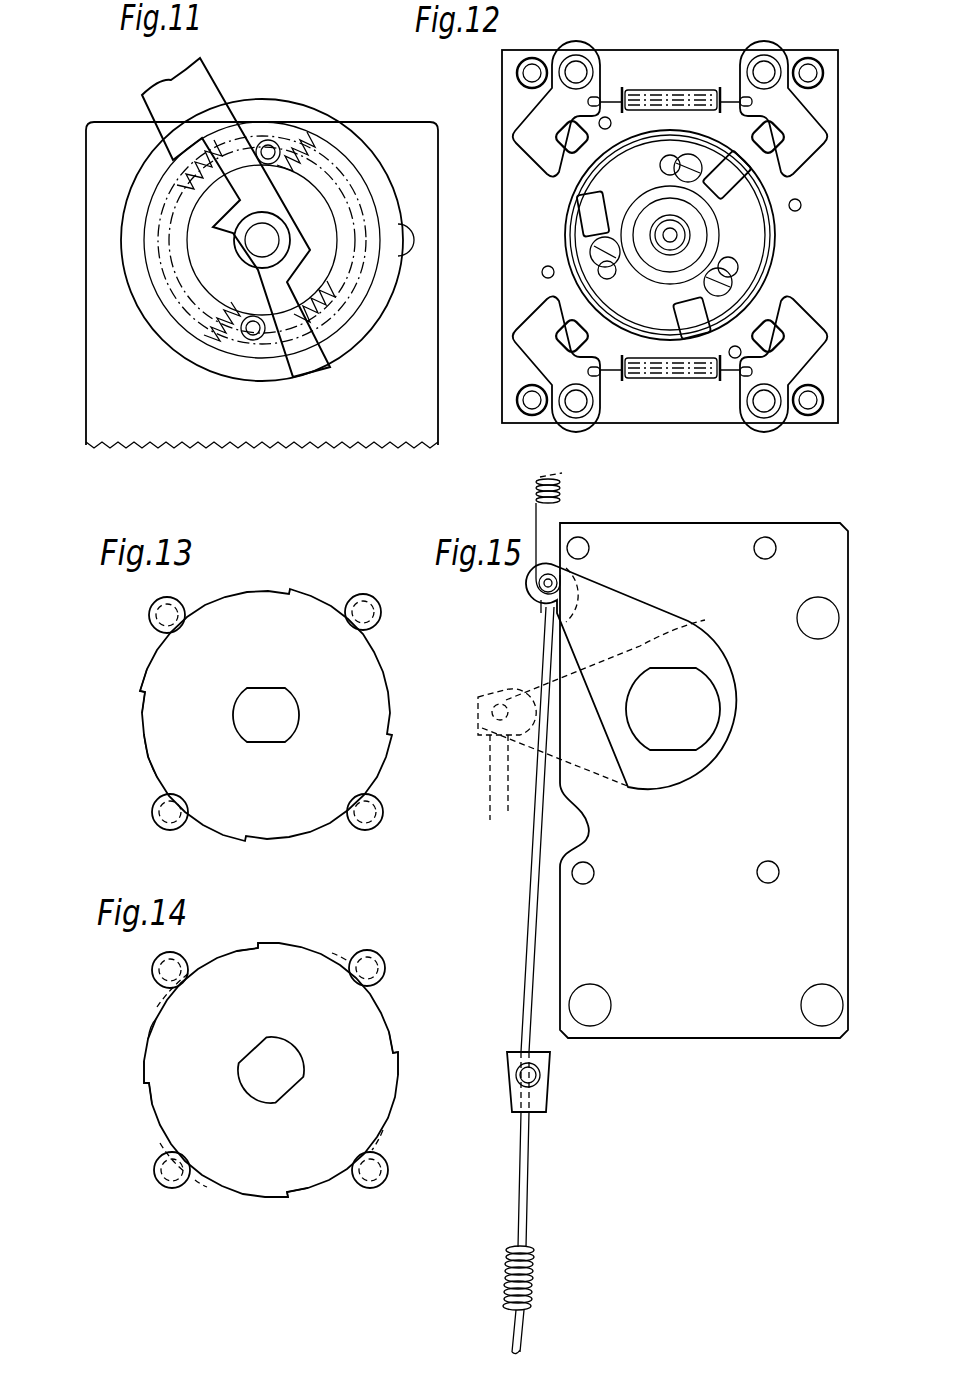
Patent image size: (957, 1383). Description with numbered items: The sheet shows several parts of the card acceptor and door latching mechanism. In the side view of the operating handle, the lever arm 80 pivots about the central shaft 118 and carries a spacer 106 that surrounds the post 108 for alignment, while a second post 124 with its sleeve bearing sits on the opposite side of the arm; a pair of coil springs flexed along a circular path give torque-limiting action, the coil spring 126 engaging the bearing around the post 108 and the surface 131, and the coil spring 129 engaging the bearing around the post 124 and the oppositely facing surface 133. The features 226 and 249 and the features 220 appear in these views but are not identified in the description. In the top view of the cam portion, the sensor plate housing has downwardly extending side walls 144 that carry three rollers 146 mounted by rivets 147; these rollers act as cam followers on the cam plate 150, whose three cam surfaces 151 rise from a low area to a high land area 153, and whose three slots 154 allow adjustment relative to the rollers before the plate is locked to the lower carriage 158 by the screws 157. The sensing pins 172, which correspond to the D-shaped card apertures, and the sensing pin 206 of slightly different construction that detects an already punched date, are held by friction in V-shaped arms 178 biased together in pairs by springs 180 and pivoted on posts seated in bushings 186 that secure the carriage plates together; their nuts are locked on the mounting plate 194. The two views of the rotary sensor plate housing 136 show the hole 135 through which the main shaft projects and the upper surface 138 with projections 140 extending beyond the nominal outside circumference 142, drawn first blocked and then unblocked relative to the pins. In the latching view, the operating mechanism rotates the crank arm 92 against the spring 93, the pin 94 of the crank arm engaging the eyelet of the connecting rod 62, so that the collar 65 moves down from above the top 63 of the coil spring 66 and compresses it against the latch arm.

In FIG. 11, the lever arm 80 is at (198, 118).
In FIG. 11, the spacer 106 is at (268, 140).
In FIG. 11, the post 108 is at (273, 146).
In FIG. 11, the coil spring 126 is at (300, 137).
In FIG. 11, the surface of the lever arm 133 is at (172, 155).
In FIG. 11, the central shaft 118 is at (249, 249).
In FIG. 11, the stop button 226 is at (411, 240).
In FIG. 12, the stop button 226 is at (564, 243).
In FIG. 11, the housing wall 249 is at (320, 427).
In FIG. 11, the coil spring 129 is at (223, 338).
In FIG. 11, the second post 124 is at (253, 340).
In FIG. 11, the surface of the lever arm 131 is at (327, 338).
In FIG. 12, the bushing 186 is at (565, 57).
In FIG. 12, the locating hole 220 is at (607, 117).
In FIG. 12, the springs 180 is at (718, 86).
In FIG. 12, the lower carriage 158 is at (690, 81).
In FIG. 12, the V-shaped arms 178 is at (553, 108).
In FIG. 12, the sensing pins 172 is at (562, 132).
In FIG. 13, the sensing pins 172 is at (160, 602).
In FIG. 14, the sensing pins 172 is at (161, 958).
In FIG. 12, the side walls 144 is at (580, 188).
In FIG. 12, the rivets 147 is at (578, 213).
In FIG. 12, the rollers 146 is at (582, 228).
In FIG. 12, the cam plate 150 is at (652, 188).
In FIG. 12, the slots 154 is at (598, 274).
In FIG. 12, the high land area 153 is at (757, 234).
In FIG. 12, the cam surfaces 151 is at (760, 262).
In FIG. 12, the screws 157 is at (591, 252).
In FIG. 12, the sensing pin 206 is at (565, 340).
In FIG. 13, the sensing pin 206 is at (162, 824).
In FIG. 14, the sensing pin 206 is at (164, 1185).
In FIG. 13, the rotary sensor plate housing 136 is at (242, 703).
In FIG. 14, the rotary sensor plate housing 136 is at (269, 1068).
In FIG. 13, the upper surface 138 is at (287, 649).
In FIG. 14, the upper surface 138 is at (289, 1002).
In FIG. 13, the hole 135 is at (287, 722).
In FIG. 14, the hole 135 is at (290, 1081).
In FIG. 13, the projections 140 is at (144, 671).
In FIG. 14, the projections 140 is at (240, 940).
In FIG. 13, the nominal outside circumference 142 is at (150, 750).
In FIG. 14, the nominal outside circumference 142 is at (149, 1039).
In FIG. 15, the spring 93 is at (562, 494).
In FIG. 15, the crank arm 92 is at (607, 590).
In FIG. 15, the pin 94 is at (541, 589).
In FIG. 15, the connecting rod 62 is at (545, 650).
In FIG. 15, the mounting plate 194 is at (686, 921).
In FIG. 15, the collar 65 is at (533, 1107).
In FIG. 15, the top of the coil spring 63 is at (533, 1249).
In FIG. 15, the coil spring 66 is at (532, 1265).